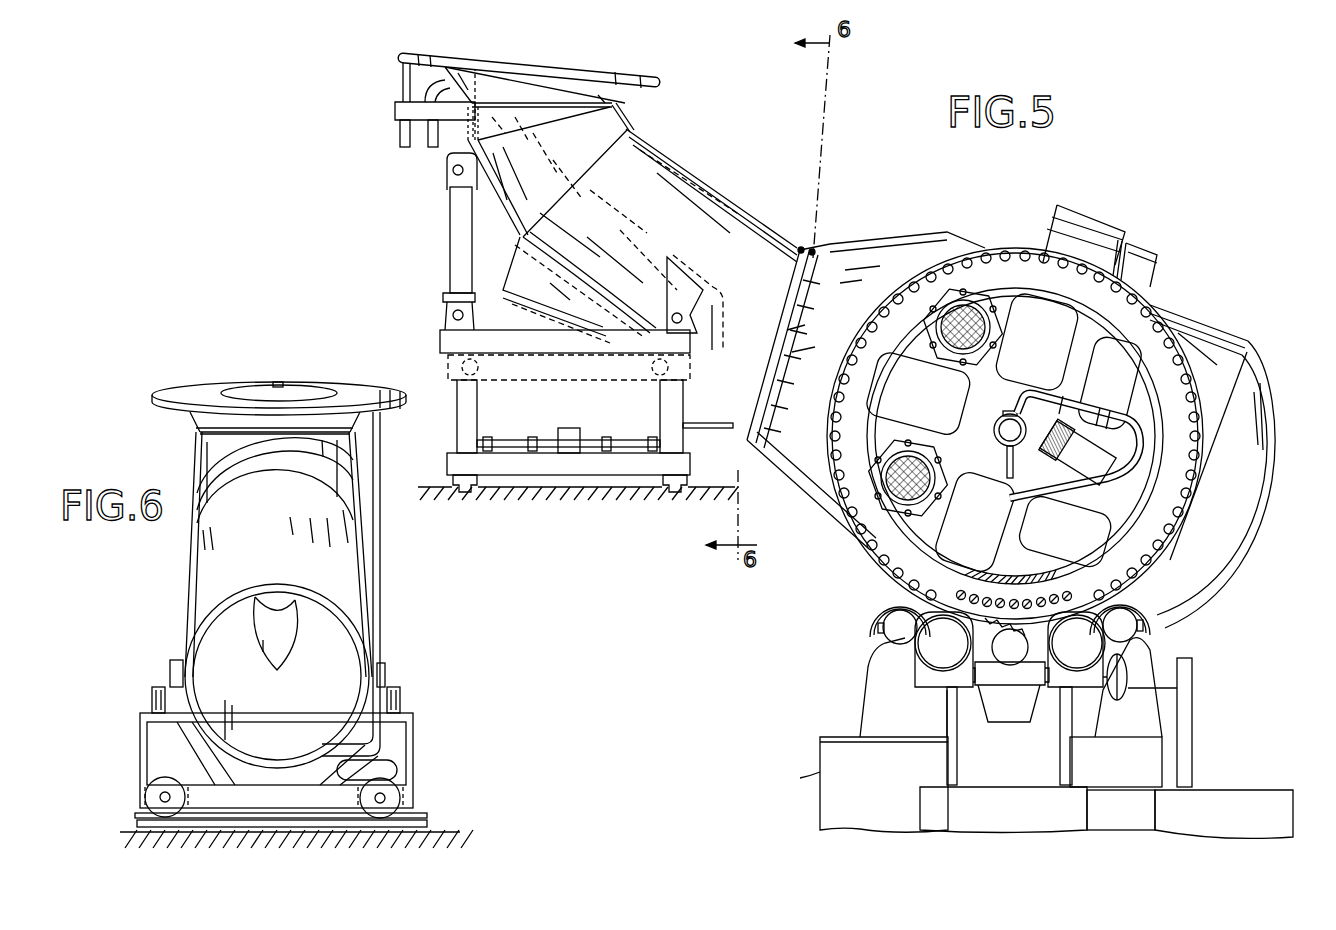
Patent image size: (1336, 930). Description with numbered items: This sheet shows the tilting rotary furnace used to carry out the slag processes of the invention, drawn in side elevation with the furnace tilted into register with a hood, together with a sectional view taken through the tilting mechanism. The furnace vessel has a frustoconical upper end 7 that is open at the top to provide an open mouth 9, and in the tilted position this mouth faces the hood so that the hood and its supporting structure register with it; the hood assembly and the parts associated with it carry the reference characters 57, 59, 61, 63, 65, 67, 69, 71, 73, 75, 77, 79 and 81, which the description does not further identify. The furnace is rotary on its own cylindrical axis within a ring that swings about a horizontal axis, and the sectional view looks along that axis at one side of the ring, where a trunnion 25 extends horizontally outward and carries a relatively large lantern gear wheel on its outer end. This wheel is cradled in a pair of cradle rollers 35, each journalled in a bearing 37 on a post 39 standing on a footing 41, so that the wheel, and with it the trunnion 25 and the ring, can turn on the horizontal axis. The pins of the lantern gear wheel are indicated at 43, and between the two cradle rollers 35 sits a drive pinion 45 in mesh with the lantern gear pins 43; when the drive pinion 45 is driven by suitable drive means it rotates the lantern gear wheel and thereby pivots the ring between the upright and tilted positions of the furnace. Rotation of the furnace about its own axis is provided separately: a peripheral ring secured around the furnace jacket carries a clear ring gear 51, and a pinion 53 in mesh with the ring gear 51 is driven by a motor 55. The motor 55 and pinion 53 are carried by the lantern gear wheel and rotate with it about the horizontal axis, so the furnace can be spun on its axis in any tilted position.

In FIG. 5, the frustoconical upper end 7 is at (881, 236).
In FIG. 5, the open mouth 9 is at (800, 248).
In FIG. 5, the trunnion 25 is at (1002, 428).
In FIG. 5, the cradle rollers 35 is at (883, 605).
In FIG. 5, the bearing 37 is at (877, 647).
In FIG. 5, the post 39 is at (862, 690).
In FIG. 5, the footing 41 is at (800, 775).
In FIG. 5, the lantern gear pins 43 is at (1150, 330).
In FIG. 5, the drive pinion 45 is at (1010, 698).
In FIG. 5, the ring gear 51 is at (1128, 250).
In FIG. 5, the pinion 53 is at (1012, 496).
In FIG. 5, the motor 55 is at (1090, 476).
In FIG. 5, the hood 57 is at (676, 79).
In FIG. 6, the hood 57 is at (300, 380).
In FIG. 5, the conduit 59 is at (737, 203).
In FIG. 5, the transition piece 61 is at (625, 125).
In FIG. 5, the rod 63 is at (430, 53).
In FIG. 6, the rod 63 is at (177, 390).
In FIG. 5, the deflector plate 65 is at (527, 308).
In FIG. 6, the deflector plate 65 is at (300, 618).
In FIG. 5, the support column 67 is at (437, 259).
In FIG. 5, the beam 69 is at (440, 342).
In FIG. 6, the beam 69 is at (380, 658).
In FIG. 5, the pivot bearing 71 is at (448, 370).
In FIG. 6, the pivot bearing 71 is at (402, 705).
In FIG. 5, the drive mechanism 73 is at (553, 378).
In FIG. 6, the drive mechanism 73 is at (400, 690).
In FIG. 5, the carriage 75 is at (568, 476).
In FIG. 6, the carriage 75 is at (414, 760).
In FIG. 5, the wheel 77 is at (457, 480).
In FIG. 6, the wheel 77 is at (142, 795).
In FIG. 5, the rail 79 is at (463, 495).
In FIG. 6, the rail 79 is at (430, 822).
In FIG. 5, the screened port 81 is at (961, 355).